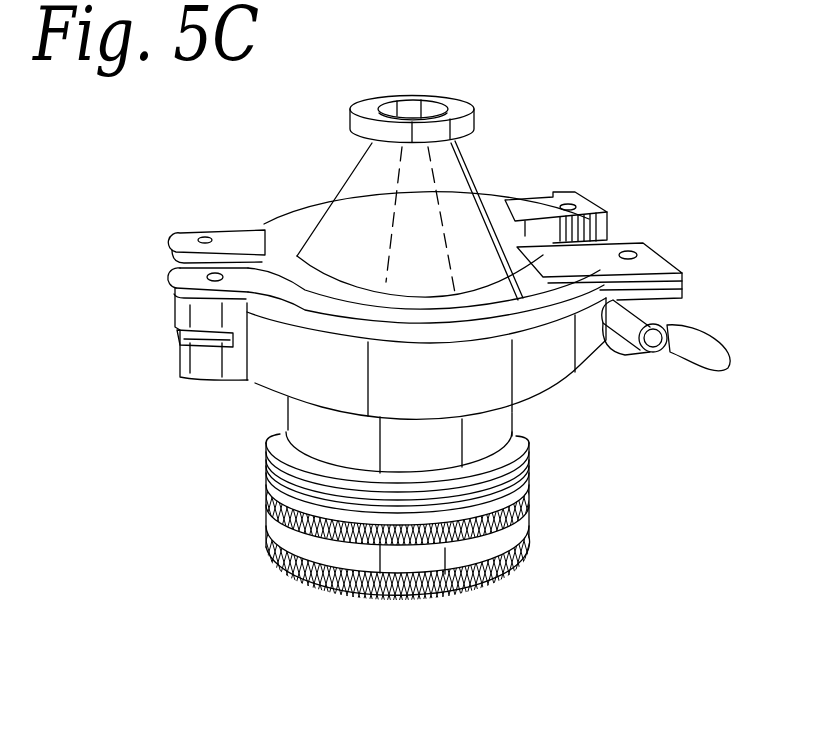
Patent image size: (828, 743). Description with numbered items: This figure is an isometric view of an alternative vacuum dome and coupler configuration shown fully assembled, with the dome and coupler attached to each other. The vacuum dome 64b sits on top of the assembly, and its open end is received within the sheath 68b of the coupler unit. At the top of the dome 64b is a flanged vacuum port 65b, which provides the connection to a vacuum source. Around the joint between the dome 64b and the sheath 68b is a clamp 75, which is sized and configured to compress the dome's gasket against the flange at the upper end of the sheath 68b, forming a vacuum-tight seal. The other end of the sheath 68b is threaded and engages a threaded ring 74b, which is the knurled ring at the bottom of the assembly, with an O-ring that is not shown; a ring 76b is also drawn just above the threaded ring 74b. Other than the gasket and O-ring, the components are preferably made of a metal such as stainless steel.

The flanged vacuum port 65b is at (430, 100).
The vacuum dome 64b is at (473, 180).
The clamp 75 is at (550, 365).
The sheath 68b is at (305, 417).
The flange ring 76b is at (533, 462).
The threaded ring 74b is at (525, 547).